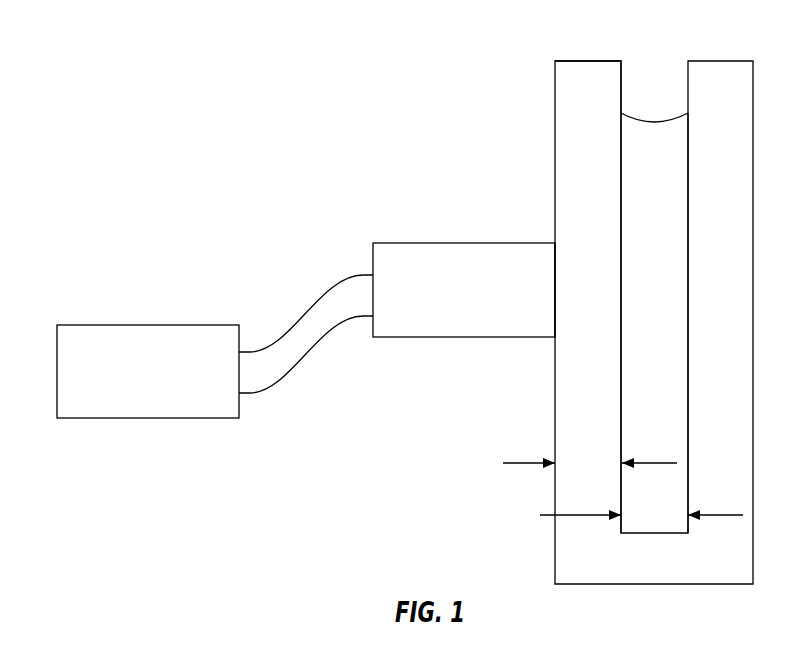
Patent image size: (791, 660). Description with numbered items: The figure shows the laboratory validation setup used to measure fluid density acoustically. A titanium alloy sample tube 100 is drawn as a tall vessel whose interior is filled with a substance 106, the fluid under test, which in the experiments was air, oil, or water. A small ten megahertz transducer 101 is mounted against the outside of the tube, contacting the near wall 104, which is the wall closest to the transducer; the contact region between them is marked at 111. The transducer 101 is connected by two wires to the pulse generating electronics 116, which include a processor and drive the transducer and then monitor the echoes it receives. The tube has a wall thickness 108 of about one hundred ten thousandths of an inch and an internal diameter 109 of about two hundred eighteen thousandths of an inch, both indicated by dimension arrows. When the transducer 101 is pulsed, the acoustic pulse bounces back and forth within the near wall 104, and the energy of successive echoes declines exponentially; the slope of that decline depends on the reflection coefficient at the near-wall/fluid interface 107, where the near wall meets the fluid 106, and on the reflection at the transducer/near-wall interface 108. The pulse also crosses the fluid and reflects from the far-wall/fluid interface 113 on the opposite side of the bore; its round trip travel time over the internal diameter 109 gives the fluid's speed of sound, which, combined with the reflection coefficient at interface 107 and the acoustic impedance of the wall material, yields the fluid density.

The sample tube 100 is at (653, 584).
The transducer 101 is at (415, 243).
The near wall 104 is at (590, 61).
The substances filling the sample tube 106 is at (647, 130).
The near-wall/fluid interface 107 is at (621, 188).
The wall thickness 108 is at (568, 463).
The internal diameter 109 is at (621, 515).
The transducer-tube wall interface 111 is at (555, 260).
The far-wall/fluid interface 113 is at (688, 400).
The pulse generating electronics 116 is at (92, 325).